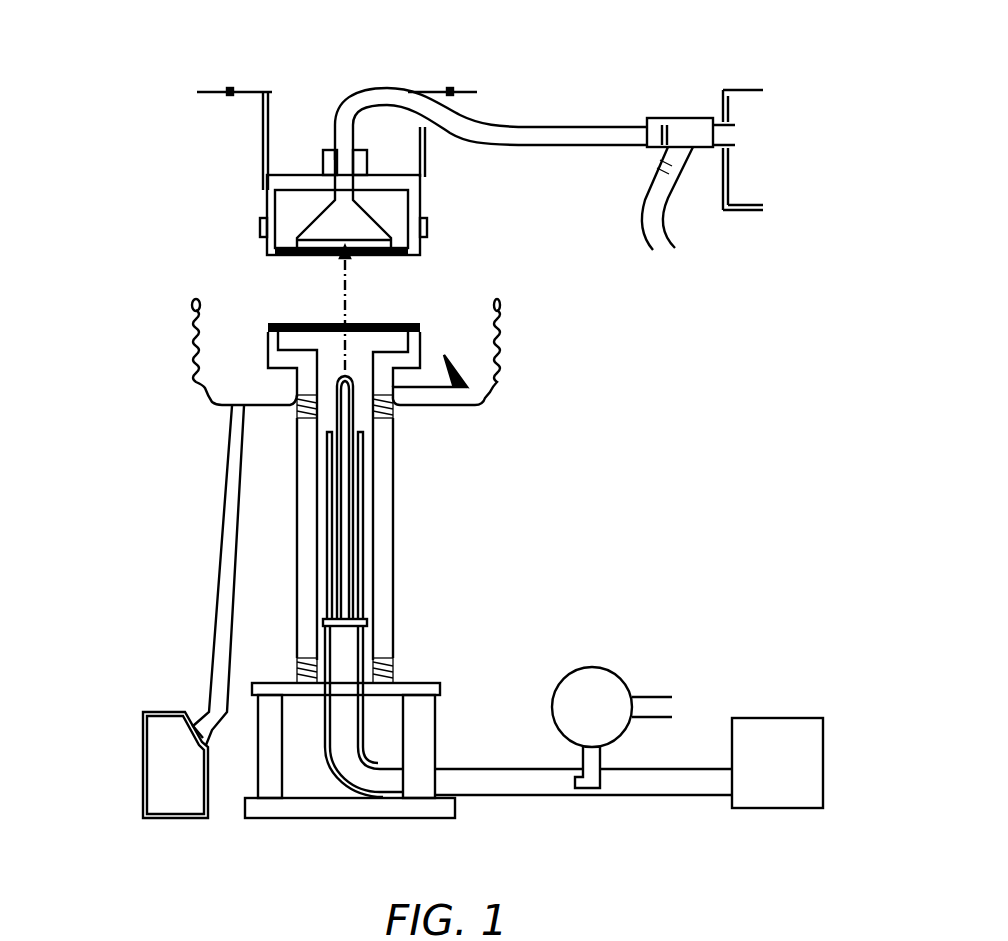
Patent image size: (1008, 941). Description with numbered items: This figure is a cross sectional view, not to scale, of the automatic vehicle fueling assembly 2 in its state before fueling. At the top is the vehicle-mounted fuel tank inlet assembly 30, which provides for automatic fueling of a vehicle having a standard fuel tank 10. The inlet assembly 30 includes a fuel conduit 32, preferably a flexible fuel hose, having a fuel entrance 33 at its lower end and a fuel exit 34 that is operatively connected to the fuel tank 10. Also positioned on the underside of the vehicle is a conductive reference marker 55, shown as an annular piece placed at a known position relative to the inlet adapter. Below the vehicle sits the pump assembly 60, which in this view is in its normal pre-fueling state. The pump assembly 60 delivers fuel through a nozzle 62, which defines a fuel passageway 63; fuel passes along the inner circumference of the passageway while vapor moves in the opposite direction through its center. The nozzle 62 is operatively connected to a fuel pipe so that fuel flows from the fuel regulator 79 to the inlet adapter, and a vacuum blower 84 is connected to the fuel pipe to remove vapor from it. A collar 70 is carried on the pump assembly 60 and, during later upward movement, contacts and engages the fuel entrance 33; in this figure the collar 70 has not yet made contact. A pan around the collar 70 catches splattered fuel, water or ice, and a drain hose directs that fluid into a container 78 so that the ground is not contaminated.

The automatic vehicle fueling assembly 2 is at (160, 150).
The fuel tank 10 is at (742, 100).
The fuel tank inlet assembly 30 is at (490, 103).
The fuel conduit 32 is at (380, 95).
The fuel entrance 33 is at (352, 256).
The fuel exit 34 is at (706, 135).
The conductive reference marker 55 is at (260, 227).
The pump assembly 60 is at (455, 593).
The nozzle 62 is at (350, 458).
The fuel passageway 63 is at (347, 527).
The collar 70 is at (420, 327).
The container 78 is at (157, 723).
The fuel regulator 79 is at (792, 728).
The vacuum blower 84 is at (593, 688).